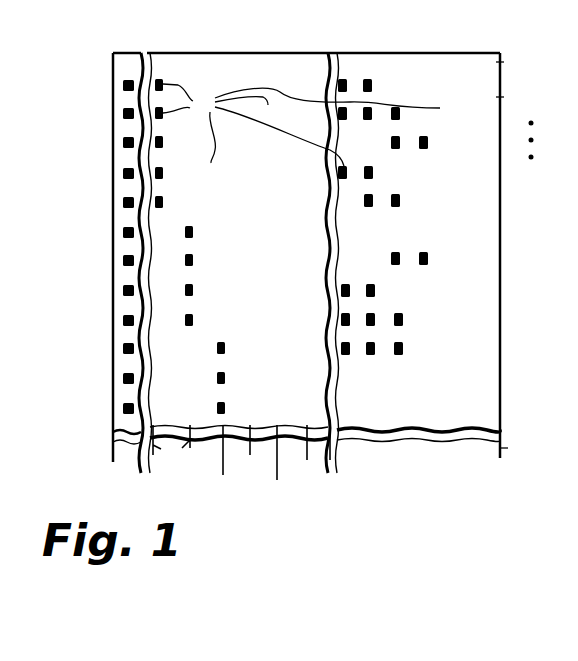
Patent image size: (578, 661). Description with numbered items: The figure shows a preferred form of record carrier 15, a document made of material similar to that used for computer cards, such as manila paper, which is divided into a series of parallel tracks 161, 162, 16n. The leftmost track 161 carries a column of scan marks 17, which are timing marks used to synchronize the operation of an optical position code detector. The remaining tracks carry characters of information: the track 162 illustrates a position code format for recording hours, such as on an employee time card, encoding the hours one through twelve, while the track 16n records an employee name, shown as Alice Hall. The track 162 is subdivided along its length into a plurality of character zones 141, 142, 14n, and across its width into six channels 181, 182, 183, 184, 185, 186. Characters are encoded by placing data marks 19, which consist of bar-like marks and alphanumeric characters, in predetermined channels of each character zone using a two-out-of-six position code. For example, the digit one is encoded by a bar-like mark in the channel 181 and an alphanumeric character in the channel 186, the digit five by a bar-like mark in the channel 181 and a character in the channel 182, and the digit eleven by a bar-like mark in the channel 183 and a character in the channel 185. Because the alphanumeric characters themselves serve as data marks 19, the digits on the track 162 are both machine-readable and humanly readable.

The record carrier 15 is at (527, 246).
The first character zone 141 is at (504, 62).
The second character zone 142 is at (504, 97).
The n-th character zone 14n is at (508, 448).
The scan mark track 161 is at (122, 62).
The hours track 162 is at (205, 75).
The name track 16n is at (400, 76).
The scan marks 17 is at (122, 88).
The data marks 19 is at (301, 125).
The first channel 181 is at (168, 455).
The second channel 182 is at (200, 449).
The third channel 183 is at (219, 464).
The fourth channel 184 is at (251, 454).
The fifth channel 185 is at (278, 467).
The sixth channel 186 is at (315, 458).